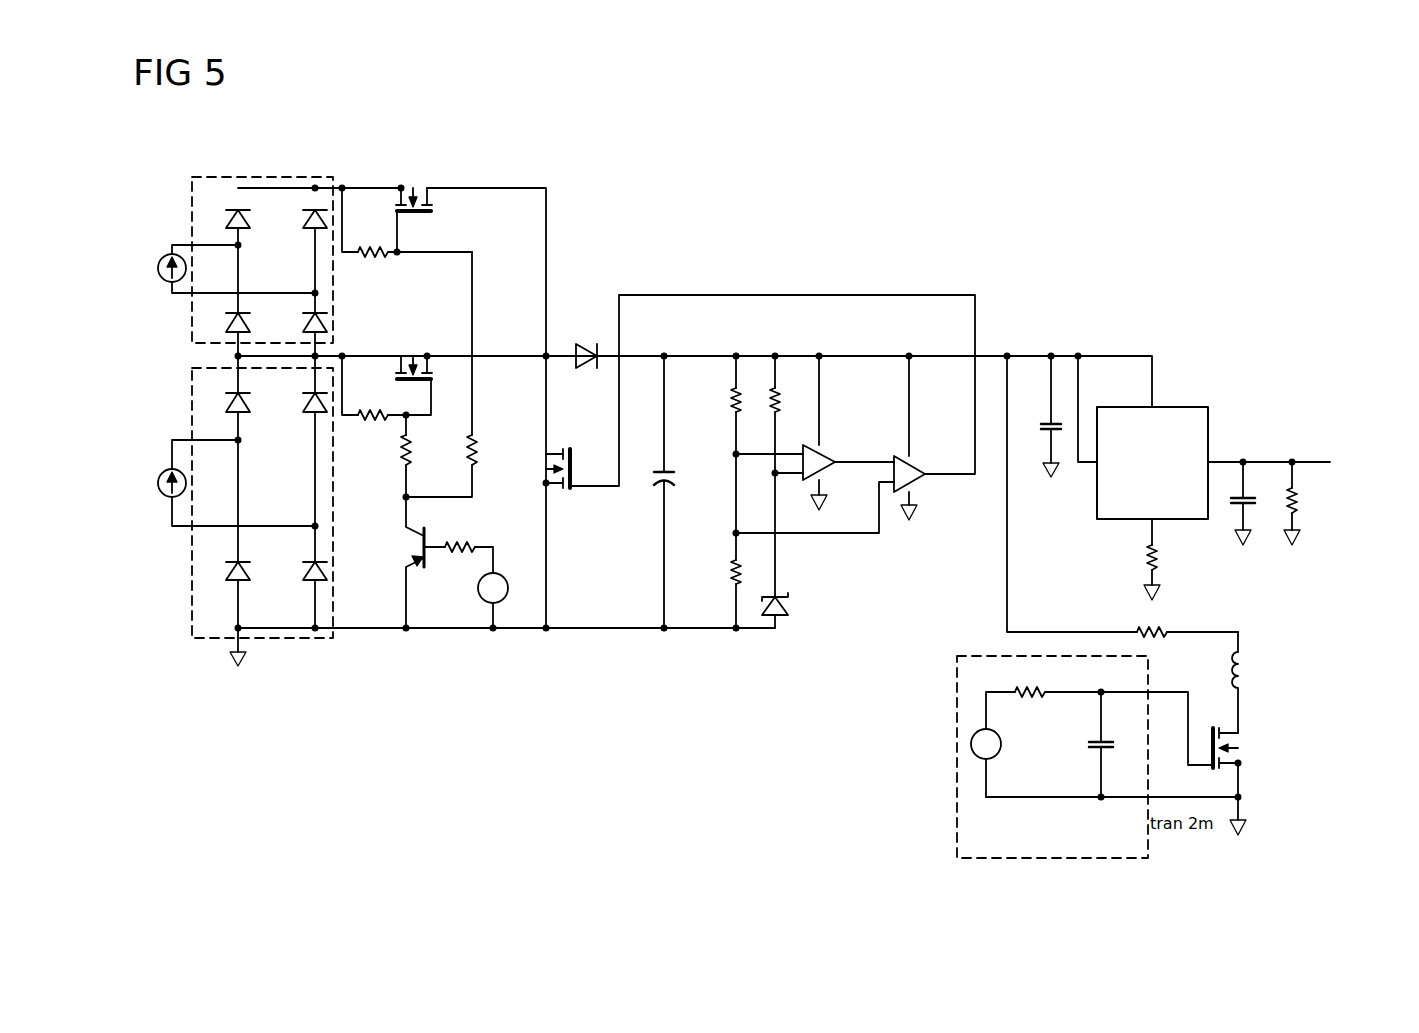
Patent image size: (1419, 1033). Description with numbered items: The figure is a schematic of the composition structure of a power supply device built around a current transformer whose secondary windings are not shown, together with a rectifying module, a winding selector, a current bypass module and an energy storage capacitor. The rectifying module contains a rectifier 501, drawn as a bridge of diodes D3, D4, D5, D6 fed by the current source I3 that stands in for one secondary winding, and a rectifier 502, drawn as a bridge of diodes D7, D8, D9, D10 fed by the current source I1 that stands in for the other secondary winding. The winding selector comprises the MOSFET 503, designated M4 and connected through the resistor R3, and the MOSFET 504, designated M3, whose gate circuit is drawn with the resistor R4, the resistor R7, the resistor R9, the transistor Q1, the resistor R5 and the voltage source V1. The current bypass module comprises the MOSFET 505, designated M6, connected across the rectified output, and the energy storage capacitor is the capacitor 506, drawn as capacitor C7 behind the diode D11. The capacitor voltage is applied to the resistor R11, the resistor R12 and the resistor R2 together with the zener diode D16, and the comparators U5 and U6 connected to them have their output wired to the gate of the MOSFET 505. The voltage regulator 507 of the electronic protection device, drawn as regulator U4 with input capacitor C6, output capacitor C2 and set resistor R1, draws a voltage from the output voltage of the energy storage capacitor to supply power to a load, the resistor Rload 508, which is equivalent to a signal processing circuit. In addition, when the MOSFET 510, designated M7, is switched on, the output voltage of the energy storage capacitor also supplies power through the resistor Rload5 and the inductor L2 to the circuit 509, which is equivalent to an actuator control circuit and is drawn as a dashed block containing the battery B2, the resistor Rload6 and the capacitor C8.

The rectifier 501 is at (267, 233).
The rectifier 502 is at (236, 542).
The metal oxide semiconductor field effect transistor 503 is at (428, 181).
The MOSFET 504 is at (430, 326).
The MOSFET 505 is at (733, 391).
The capacitor 506 is at (634, 492).
The voltage regulator 507 is at (1131, 432).
The resistor (Rload) 508 is at (1320, 452).
The circuit 509 is at (1009, 739).
The MOSFET 510 is at (1171, 760).
The diode D3 is at (232, 208).
The diode D4 is at (310, 208).
The diode D5 is at (228, 322).
The diode D6 is at (326, 324).
The diode D7 is at (228, 402).
The diode D8 is at (308, 414).
The diode D9 is at (228, 570).
The diode D10 is at (304, 598).
The diode D11 is at (584, 346).
The zener diode D16 is at (790, 609).
The current source I3 is at (163, 258).
The current source I1 is at (163, 473).
The resistor R3 is at (364, 248).
The resistor R4 is at (370, 412).
The resistor R7 is at (402, 463).
The resistor R9 is at (468, 442).
The resistor R5 is at (466, 542).
The resistor R2 is at (733, 571).
The resistor R11 is at (731, 388).
The resistor R12 is at (781, 388).
The resistor R1 is at (1147, 556).
The load resistor Rload is at (1299, 497).
The load resistor 5 Rload5 is at (1160, 628).
The load resistor 6 Rload6 is at (1016, 689).
The MOSFET M4 is at (414, 187).
The MOSFET M3 is at (414, 355).
The MOSFET M6 is at (548, 467).
The MOSFET M7 is at (1248, 738).
The transistor Q1 is at (414, 549).
The voltage source V1 is at (488, 606).
The capacitor C7 is at (641, 482).
The capacitor C6 is at (1058, 420).
The capacitor C2 is at (1252, 493).
The capacitor C8 is at (1094, 762).
The comparator U5 is at (824, 454).
The comparator U6 is at (915, 464).
The regulator U4 is at (1097, 504).
The inductor L2 is at (1246, 656).
The battery B2 is at (971, 742).